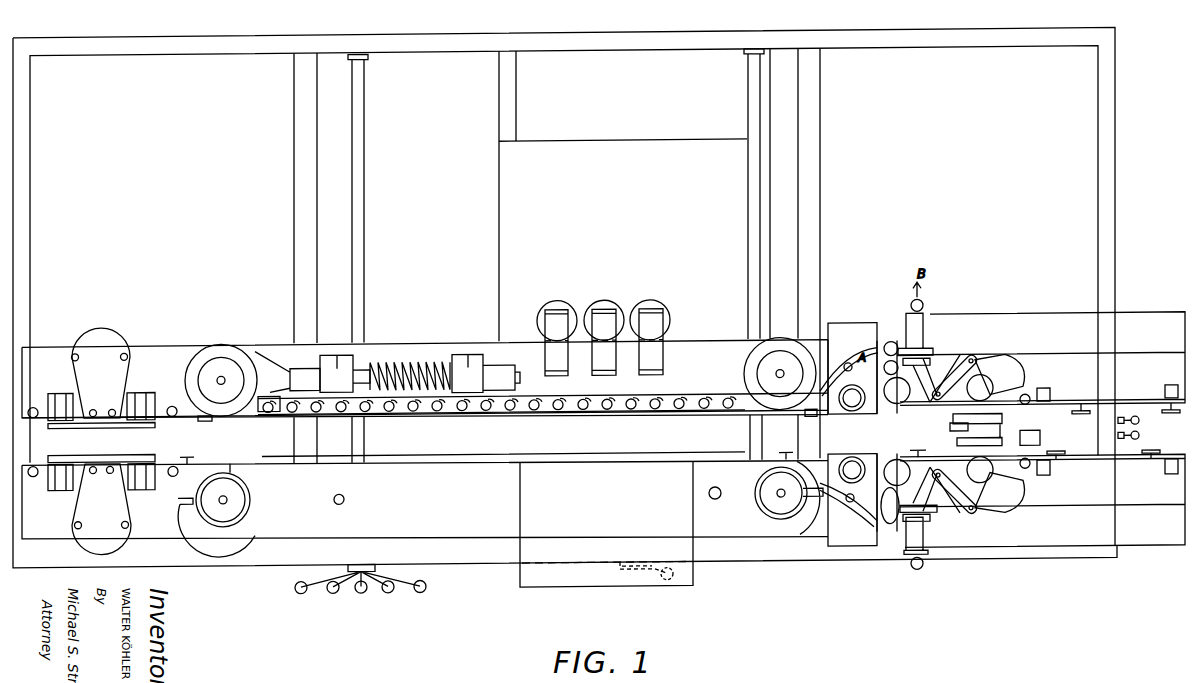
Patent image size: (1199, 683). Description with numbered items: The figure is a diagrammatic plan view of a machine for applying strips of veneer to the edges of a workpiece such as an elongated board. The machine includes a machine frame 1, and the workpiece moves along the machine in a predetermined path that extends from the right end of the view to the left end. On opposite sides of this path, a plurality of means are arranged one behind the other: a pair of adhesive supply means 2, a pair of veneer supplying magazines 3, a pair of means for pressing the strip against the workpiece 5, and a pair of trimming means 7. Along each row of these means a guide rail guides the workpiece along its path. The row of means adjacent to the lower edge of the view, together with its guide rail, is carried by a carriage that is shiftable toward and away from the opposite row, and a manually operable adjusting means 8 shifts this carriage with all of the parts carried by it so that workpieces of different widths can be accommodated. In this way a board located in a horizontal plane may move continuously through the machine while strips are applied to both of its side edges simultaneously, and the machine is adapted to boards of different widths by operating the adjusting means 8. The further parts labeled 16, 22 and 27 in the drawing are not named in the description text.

The machine frame 1 is at (1108, 141).
The adhesive supply means 2 is at (853, 415).
The veneer supplying magazine 3 is at (959, 316).
The means for pressing the strip against the workpiece 5 is at (273, 454).
The trimming means 7 is at (108, 341).
The manually operable adjusting means 8 is at (424, 595).
The holder bracket 16 is at (952, 426).
The guide rollers 22 is at (884, 358).
The guide plate post 27 is at (906, 327).